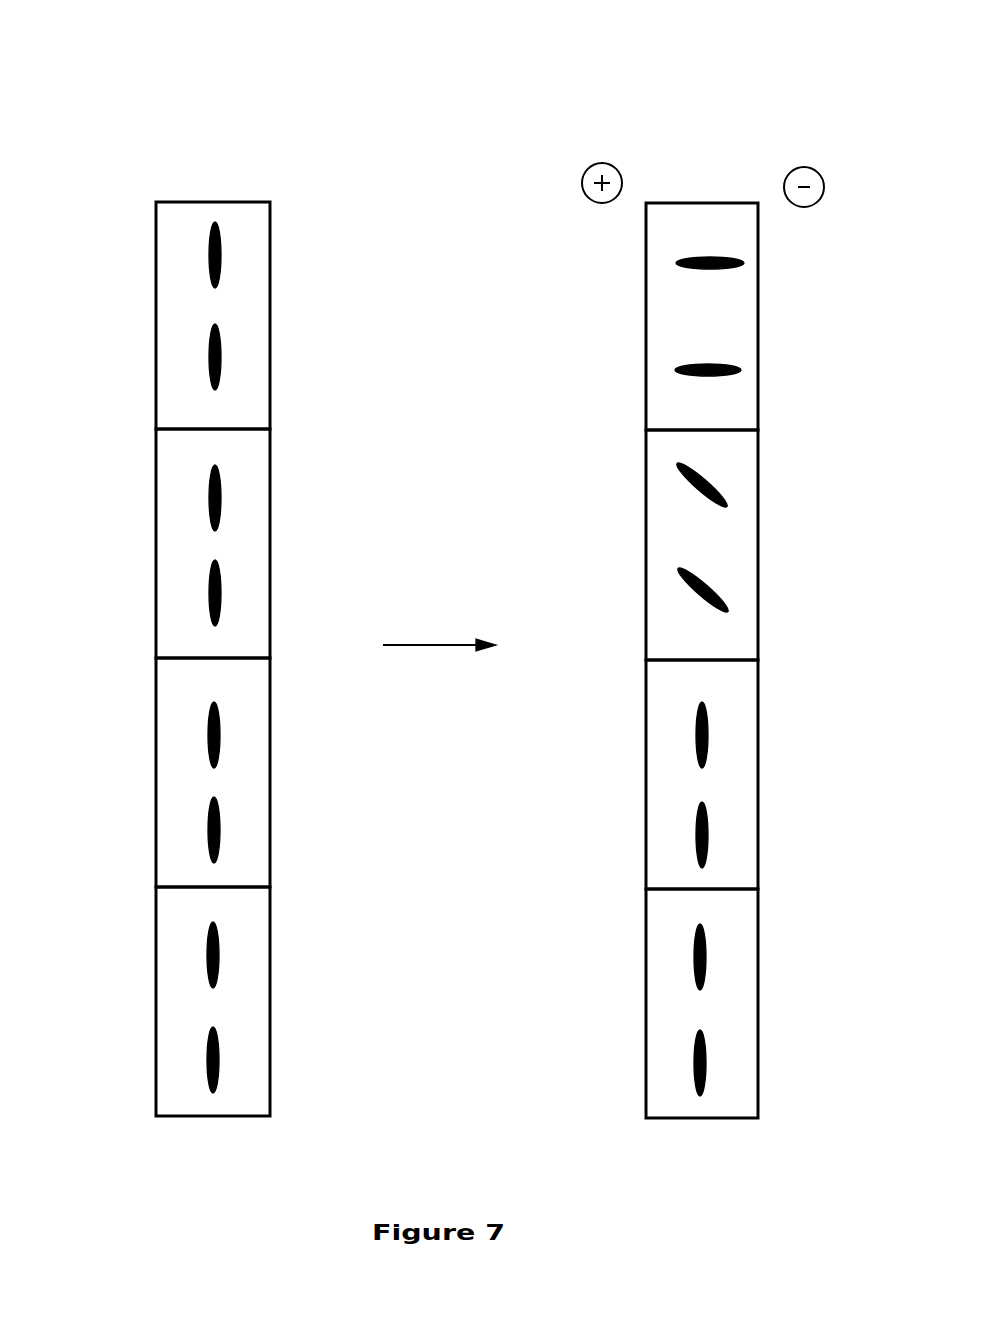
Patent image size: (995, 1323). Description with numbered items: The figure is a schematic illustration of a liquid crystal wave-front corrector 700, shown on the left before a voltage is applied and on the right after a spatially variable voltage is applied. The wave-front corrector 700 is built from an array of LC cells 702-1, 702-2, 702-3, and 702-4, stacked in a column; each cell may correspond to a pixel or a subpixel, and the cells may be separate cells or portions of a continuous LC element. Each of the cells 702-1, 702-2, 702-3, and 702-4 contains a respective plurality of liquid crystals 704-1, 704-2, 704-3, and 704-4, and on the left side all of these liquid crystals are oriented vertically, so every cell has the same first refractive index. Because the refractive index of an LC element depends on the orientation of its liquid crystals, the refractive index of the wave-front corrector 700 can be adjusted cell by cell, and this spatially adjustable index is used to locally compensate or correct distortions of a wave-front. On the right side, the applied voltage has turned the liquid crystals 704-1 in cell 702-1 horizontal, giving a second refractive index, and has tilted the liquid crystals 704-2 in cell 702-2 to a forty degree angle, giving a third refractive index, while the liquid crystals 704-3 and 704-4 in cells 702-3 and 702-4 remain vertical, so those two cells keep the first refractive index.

The liquid crystal wave-front corrector 700 is at (166, 120).
The LC cell 702-1 is at (157, 310).
The LC cell 702-2 is at (157, 550).
The LC cell 702-3 is at (157, 775).
The LC cell 702-4 is at (155, 988).
The liquid crystals 704-1 is at (220, 255).
The liquid crystals 704-2 is at (220, 497).
The liquid crystals 704-3 is at (220, 737).
The liquid crystals 704-4 is at (218, 962).